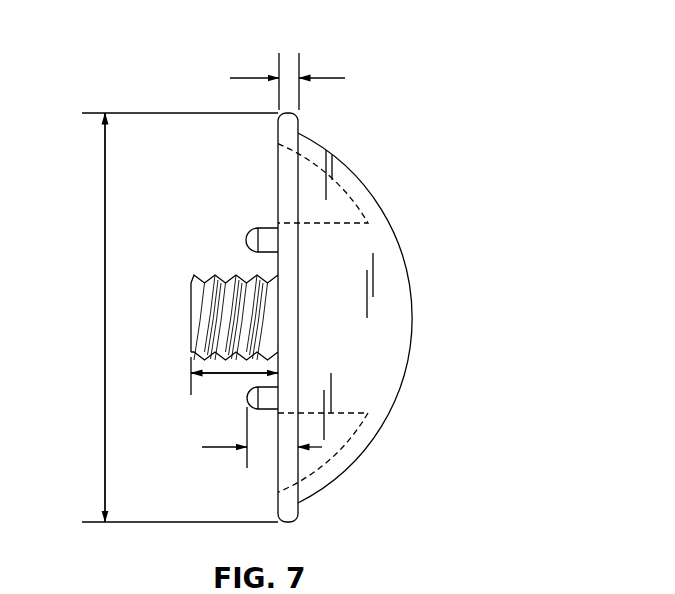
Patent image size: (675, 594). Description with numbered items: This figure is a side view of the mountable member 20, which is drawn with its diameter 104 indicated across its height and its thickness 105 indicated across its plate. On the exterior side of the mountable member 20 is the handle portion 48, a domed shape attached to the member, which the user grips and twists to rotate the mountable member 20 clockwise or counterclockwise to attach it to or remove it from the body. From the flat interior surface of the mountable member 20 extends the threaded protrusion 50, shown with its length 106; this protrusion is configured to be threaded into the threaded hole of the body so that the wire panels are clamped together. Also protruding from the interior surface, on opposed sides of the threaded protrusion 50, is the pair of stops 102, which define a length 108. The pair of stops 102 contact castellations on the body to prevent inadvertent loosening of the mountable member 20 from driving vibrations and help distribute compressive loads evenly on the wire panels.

The mountable member 20 is at (336, 313).
The handle portion 48 is at (394, 227).
The threaded protrusion 50 is at (213, 275).
The pair of stops 102 is at (259, 227).
The diameter 104 is at (105, 288).
The thickness 105 is at (330, 78).
The length 106 is at (235, 373).
The length 108 is at (213, 447).